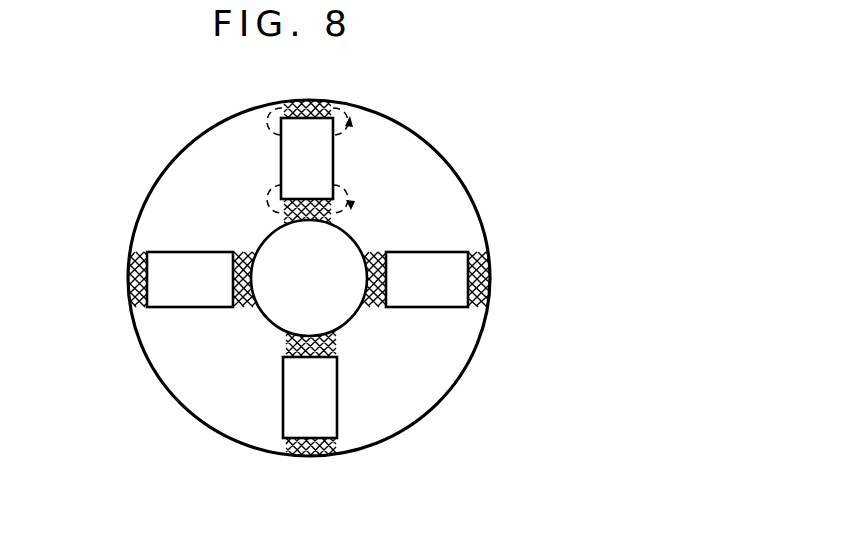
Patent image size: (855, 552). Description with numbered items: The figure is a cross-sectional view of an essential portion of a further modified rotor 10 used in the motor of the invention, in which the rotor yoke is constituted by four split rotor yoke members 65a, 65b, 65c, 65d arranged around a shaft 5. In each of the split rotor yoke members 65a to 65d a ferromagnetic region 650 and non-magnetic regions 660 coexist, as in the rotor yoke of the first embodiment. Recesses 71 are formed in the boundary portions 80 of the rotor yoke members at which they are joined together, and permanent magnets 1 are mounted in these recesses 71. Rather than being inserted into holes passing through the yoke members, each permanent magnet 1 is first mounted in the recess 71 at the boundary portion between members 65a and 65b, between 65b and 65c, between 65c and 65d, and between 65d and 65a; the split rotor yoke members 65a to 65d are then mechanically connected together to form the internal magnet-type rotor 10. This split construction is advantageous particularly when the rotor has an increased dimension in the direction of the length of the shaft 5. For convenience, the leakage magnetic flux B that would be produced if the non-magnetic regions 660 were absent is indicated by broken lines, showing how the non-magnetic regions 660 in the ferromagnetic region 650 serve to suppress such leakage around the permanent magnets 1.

The rotor 10 is at (417, 124).
The permanent magnet 1 is at (448, 260).
The shaft 5 is at (268, 319).
The recess 71 is at (452, 307).
The boundary portion 80 is at (237, 303).
The ferromagnetic region 650 is at (158, 202).
The non-magnetic region 660 is at (325, 457).
The split rotor yoke member 65a is at (408, 183).
The split rotor yoke member 65b is at (403, 392).
The split rotor yoke member 65c is at (236, 403).
The split rotor yoke member 65d is at (195, 181).
The leakage magnetic flux B is at (268, 193).